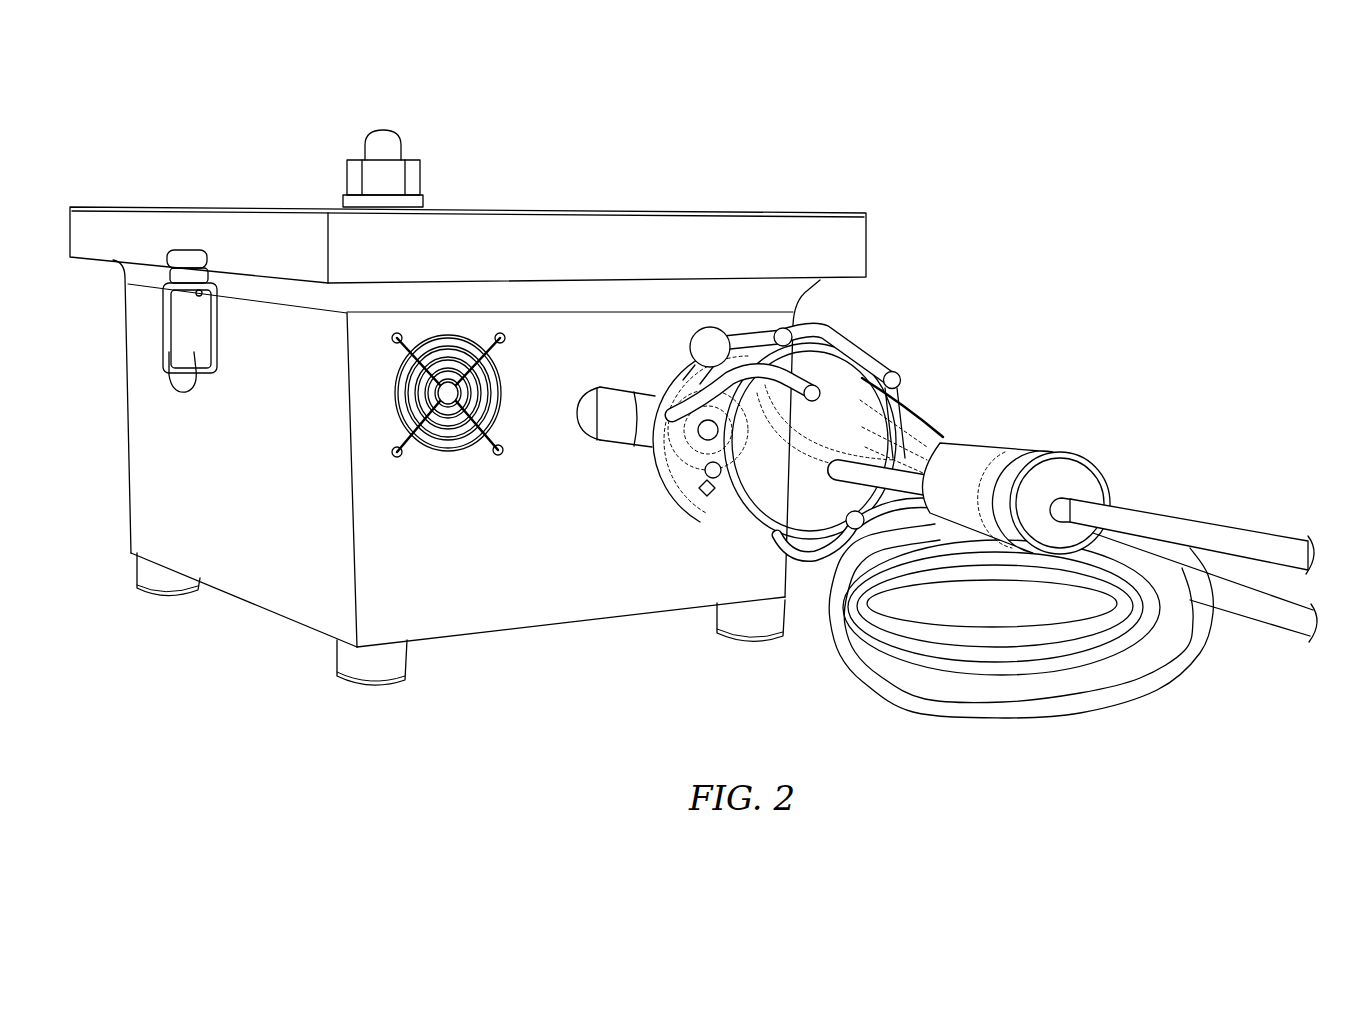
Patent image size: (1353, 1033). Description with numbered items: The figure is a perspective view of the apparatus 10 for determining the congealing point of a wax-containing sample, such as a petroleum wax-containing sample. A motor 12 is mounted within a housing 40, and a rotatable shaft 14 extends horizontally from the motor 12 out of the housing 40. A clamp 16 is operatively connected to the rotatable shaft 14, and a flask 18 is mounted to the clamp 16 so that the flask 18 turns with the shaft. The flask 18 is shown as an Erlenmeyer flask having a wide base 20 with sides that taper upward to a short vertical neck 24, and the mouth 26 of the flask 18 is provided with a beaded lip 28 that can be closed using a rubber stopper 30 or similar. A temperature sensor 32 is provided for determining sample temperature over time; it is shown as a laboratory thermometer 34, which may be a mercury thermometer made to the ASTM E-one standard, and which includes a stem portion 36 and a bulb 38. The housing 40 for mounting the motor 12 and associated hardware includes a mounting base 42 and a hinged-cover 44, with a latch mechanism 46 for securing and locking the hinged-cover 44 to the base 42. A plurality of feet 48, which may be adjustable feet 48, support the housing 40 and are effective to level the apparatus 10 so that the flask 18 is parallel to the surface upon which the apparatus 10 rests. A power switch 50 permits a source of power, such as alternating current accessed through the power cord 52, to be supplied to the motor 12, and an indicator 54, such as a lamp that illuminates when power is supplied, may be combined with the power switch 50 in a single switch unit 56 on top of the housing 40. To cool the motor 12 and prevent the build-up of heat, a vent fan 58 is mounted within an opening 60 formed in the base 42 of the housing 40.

The apparatus 10 is at (783, 112).
The motor 12 is at (955, 430).
The rotatable shaft 14 is at (588, 440).
The clamp 16 is at (833, 325).
The flask 18 is at (912, 410).
The wide base 20 is at (747, 520).
The short vertical neck 24 is at (1010, 450).
The mouth 26 is at (1110, 500).
The beaded lip 28 is at (1060, 455).
The rubber stopper 30 is at (1025, 496).
The temperature sensor 32 is at (1215, 525).
The laboratory thermometer 34 is at (1170, 515).
The stem portion 36 is at (1280, 540).
The bulb 38 is at (835, 480).
The housing 40 is at (258, 608).
The mounting base 42 is at (560, 625).
The hinged-cover 44 is at (868, 245).
The latch mechanism 46 is at (218, 362).
The feet 48 is at (140, 578).
The power switch 50 is at (405, 157).
The power cord 52 is at (1028, 720).
The indicator 54 is at (363, 145).
The single switch unit 56 is at (353, 180).
The vent fan 58 is at (503, 385).
The opening 60 is at (448, 452).